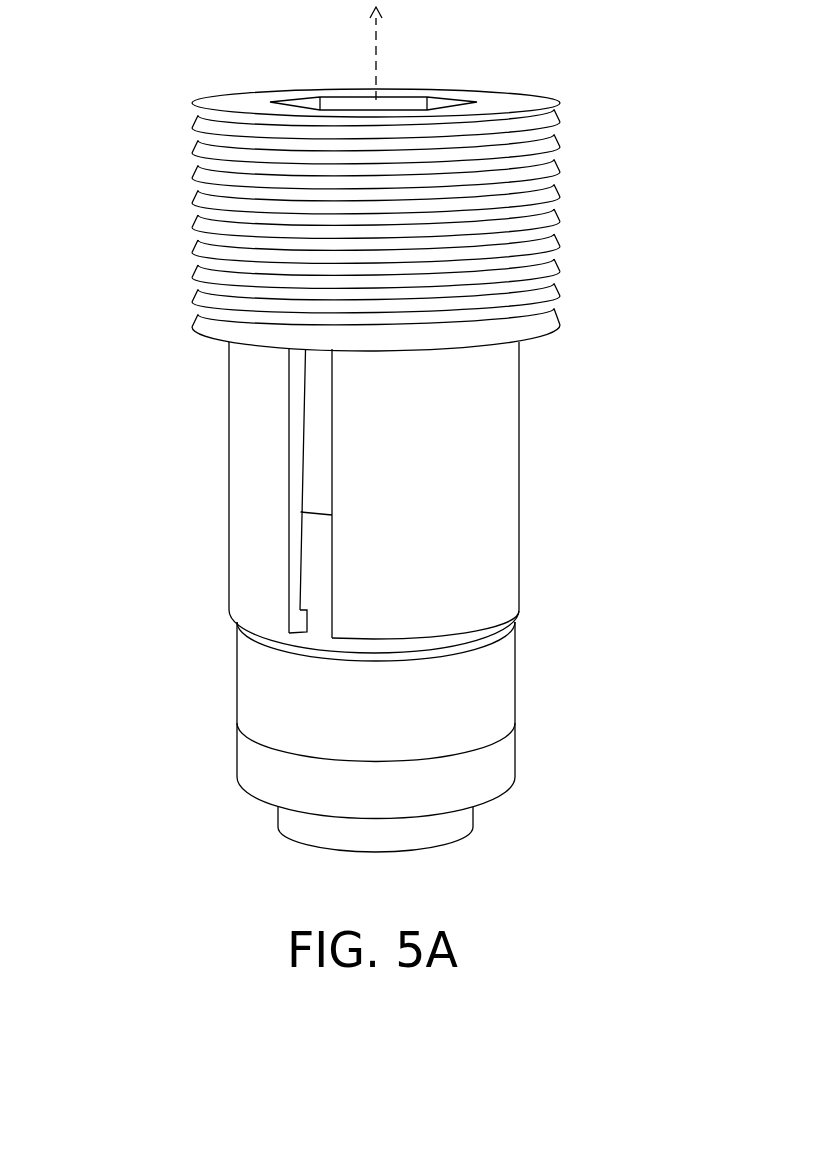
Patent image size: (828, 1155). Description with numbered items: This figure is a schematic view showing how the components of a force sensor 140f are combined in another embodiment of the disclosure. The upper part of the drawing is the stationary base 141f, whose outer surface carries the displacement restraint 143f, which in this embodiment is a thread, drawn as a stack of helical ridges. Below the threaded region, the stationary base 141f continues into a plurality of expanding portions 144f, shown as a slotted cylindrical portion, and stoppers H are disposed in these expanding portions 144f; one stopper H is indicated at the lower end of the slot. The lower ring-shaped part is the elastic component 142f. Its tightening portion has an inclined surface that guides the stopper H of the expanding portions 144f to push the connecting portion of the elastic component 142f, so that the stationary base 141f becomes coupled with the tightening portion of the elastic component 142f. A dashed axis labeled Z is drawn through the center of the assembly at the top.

The force sensor 140f is at (371, 431).
The stationary base 141f is at (186, 152).
The displacement restraint 143f is at (218, 259).
The expanding portions 144f is at (383, 497).
The elastic component 142f is at (503, 690).
The stopper H is at (300, 620).
The axis Z is at (390, 53).